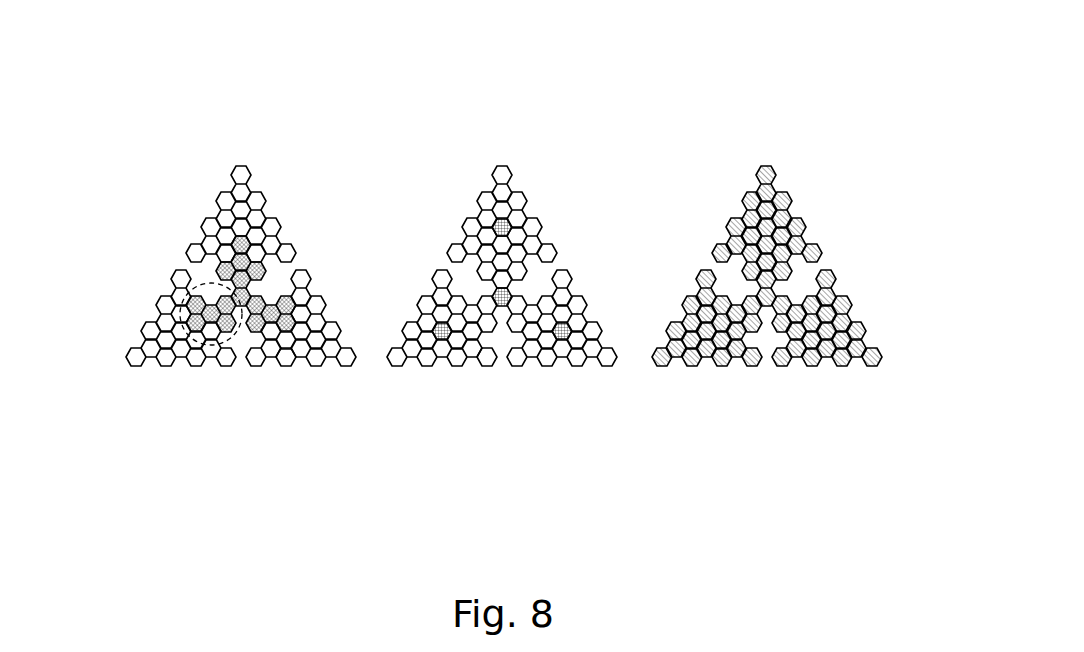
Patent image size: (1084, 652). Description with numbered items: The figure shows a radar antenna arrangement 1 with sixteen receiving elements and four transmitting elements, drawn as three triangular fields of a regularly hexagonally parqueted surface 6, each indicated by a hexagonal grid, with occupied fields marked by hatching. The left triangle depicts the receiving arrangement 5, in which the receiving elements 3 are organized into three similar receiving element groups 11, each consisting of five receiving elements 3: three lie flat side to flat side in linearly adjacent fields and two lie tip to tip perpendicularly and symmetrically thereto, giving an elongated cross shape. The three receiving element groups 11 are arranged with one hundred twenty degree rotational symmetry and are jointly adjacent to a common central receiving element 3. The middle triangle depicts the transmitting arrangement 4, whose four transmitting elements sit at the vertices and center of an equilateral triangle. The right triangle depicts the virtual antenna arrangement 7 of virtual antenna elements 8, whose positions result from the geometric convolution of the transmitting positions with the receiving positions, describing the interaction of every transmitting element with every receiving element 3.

The radar antenna arrangement 1 is at (329, 120).
The receiving element 3 is at (238, 290).
The transmitting arrangement 4 is at (560, 118).
The receiving arrangement 5 is at (154, 120).
The hexagonally parqueted surface 6 is at (286, 367).
The virtual antenna arrangement 7 is at (814, 119).
The virtual antenna element 8 is at (880, 356).
The receiving element group 11 is at (186, 300).